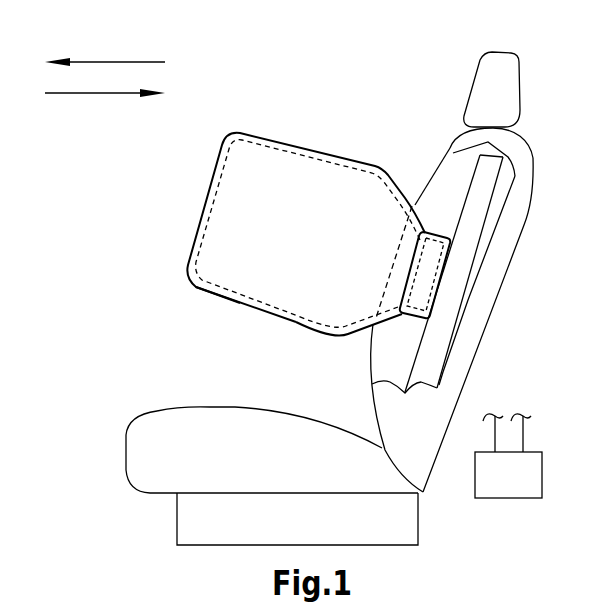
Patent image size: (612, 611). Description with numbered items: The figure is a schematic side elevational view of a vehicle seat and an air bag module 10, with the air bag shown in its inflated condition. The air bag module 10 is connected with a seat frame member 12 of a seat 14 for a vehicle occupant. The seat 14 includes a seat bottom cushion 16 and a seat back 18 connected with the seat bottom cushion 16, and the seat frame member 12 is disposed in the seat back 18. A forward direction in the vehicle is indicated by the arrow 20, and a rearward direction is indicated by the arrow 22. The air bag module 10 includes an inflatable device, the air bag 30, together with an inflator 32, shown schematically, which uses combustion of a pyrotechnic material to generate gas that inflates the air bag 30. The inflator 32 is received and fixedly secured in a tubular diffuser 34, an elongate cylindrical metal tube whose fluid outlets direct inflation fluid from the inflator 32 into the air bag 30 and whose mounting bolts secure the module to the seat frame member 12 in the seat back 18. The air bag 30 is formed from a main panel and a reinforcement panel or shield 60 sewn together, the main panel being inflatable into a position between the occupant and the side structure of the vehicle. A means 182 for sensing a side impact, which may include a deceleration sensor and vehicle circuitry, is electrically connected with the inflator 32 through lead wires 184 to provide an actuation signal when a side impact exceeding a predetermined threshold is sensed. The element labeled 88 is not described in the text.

The air bag module 10 is at (366, 138).
The seat frame member 12 is at (485, 183).
The seat 14 is at (152, 385).
The seat bottom cushion 16 is at (208, 407).
The seat back 18 is at (463, 369).
The arrow 20 is at (107, 62).
The arrow 22 is at (100, 95).
The air bag 30 is at (183, 229).
The inflator 32 is at (423, 292).
The tubular diffuser 34 is at (418, 246).
The reinforcement panel or shield 60 is at (184, 292).
The air bag panel 88 is at (207, 189).
The means for sensing a side impact 182 is at (524, 500).
The lead wires 184 is at (528, 428).